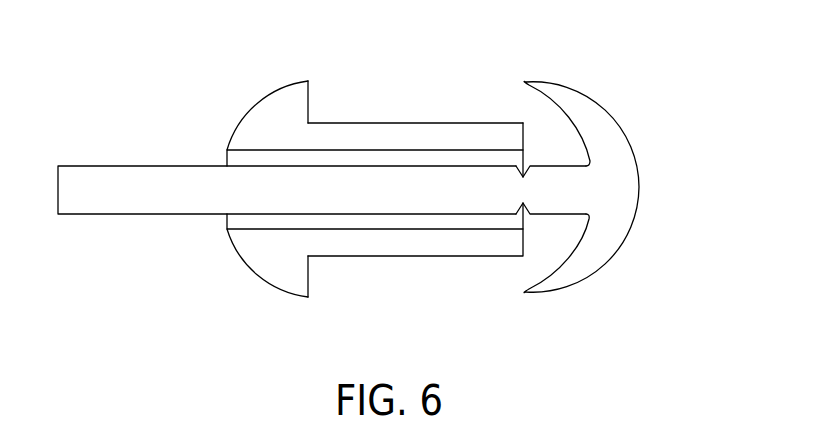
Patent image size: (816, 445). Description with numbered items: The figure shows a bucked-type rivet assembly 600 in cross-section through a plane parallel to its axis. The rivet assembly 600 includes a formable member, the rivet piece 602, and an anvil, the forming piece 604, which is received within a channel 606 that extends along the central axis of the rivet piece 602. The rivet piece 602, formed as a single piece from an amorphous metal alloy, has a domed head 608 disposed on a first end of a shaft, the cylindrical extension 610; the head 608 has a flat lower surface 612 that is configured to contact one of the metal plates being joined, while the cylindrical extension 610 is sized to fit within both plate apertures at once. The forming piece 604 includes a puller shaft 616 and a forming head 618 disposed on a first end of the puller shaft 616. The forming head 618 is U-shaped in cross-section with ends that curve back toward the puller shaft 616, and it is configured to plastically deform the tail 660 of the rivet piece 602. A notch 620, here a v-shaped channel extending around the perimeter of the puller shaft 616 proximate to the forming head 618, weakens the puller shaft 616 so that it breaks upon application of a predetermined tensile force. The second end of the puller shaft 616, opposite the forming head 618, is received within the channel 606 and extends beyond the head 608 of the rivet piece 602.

The rivet assembly 600 is at (153, 125).
The rivet piece 602 is at (288, 80).
The forming piece 604 is at (99, 215).
The channel 606 is at (335, 229).
The head 608 is at (275, 123).
The cylindrical extension 610 is at (364, 137).
The flat lower surface 612 is at (312, 88).
The puller shaft 616 is at (190, 195).
The forming head 618 is at (590, 118).
The notch 620 is at (523, 203).
The tail 660 is at (505, 124).